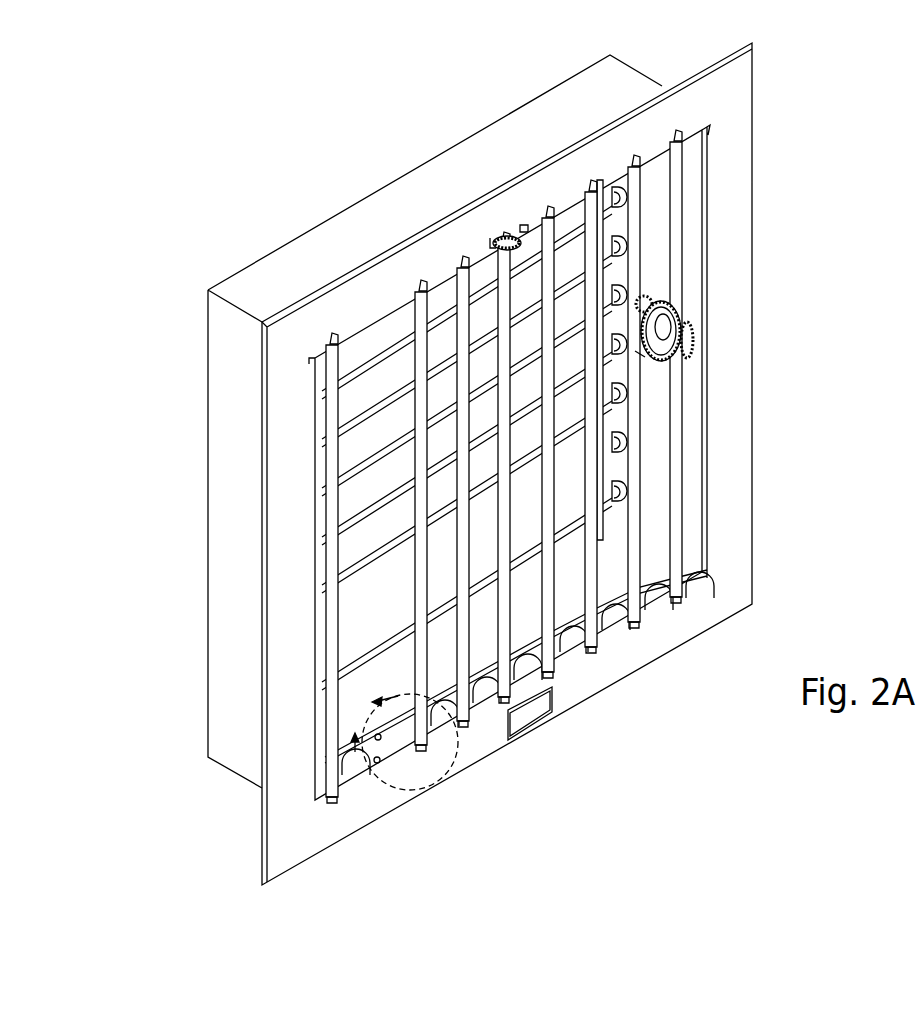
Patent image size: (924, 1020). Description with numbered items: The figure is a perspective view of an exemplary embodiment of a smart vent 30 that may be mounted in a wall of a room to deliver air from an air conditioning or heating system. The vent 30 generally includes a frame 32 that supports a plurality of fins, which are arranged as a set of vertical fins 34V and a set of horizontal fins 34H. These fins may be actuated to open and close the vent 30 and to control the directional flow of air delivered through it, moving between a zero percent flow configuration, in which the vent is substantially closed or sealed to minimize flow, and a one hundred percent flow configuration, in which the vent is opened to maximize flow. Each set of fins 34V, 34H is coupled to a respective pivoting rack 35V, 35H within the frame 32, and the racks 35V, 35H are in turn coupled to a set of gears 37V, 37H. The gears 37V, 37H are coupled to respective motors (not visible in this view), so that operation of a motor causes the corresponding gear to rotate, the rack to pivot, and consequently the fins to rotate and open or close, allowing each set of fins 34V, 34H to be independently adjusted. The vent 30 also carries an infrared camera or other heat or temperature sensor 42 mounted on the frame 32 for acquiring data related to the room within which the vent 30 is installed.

The vent 30 is at (792, 343).
The frame 32 is at (225, 508).
The horizontal fins 34H is at (568, 455).
The vertical fins 34V is at (683, 290).
The pivoting rack 35H is at (618, 248).
The pivoting rack 35V is at (578, 628).
The gear 37H is at (690, 333).
The gear 37V is at (510, 230).
The infrared camera or sensor 42 is at (533, 718).